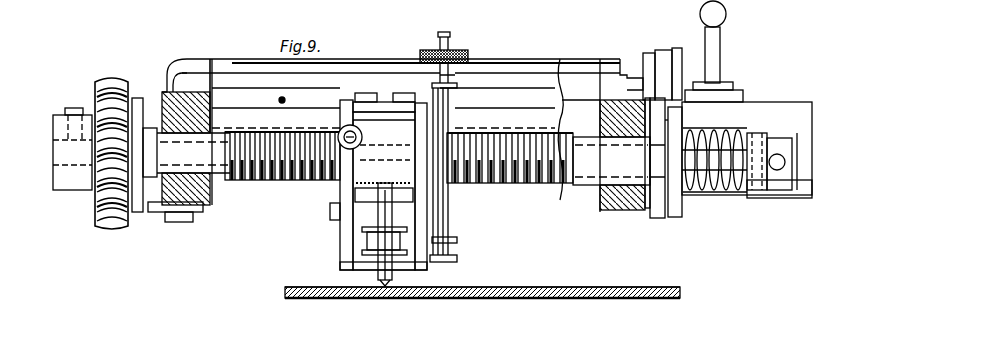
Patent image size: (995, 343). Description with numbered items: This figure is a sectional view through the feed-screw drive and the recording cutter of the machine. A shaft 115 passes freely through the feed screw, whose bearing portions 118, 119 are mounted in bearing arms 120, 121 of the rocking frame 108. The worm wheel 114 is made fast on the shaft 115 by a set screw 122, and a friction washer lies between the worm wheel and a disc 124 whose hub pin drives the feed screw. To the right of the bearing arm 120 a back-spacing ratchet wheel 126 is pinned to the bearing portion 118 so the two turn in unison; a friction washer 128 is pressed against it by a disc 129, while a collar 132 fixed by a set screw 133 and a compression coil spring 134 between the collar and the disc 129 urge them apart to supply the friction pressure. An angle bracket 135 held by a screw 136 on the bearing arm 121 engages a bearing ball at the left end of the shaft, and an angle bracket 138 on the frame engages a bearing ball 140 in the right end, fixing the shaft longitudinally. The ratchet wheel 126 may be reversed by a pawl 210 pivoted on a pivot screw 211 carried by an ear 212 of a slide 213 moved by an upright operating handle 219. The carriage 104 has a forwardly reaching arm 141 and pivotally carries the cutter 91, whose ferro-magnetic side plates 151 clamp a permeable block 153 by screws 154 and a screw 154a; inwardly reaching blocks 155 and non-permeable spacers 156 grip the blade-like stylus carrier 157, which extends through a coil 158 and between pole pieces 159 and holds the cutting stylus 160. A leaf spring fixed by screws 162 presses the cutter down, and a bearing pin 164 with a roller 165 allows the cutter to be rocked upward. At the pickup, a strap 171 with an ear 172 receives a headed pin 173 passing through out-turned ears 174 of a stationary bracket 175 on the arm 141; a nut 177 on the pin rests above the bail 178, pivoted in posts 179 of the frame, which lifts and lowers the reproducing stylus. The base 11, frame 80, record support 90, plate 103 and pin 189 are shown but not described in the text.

The base plate 11 is at (545, 318).
The frame 80 is at (482, 8).
The base surface 90 is at (560, 288).
The cutter 91 is at (365, 226).
The plate 103 is at (137, 213).
The carriage 104 is at (532, 186).
The rocking frame 108 is at (765, 130).
The worm wheel 114 is at (108, 230).
The shaft 115 is at (72, 165).
The bearing portion 118 is at (600, 206).
The bearing portion 119 is at (214, 190).
The bearing arm 120 is at (645, 210).
The bearing arm 121 is at (170, 76).
The set screw 122 is at (74, 108).
The disc 124 is at (150, 215).
The back-spacing ratchet wheel 126 is at (656, 220).
The friction washer 128 is at (673, 220).
The disc 129 is at (681, 210).
The collar 132 is at (770, 200).
The set screw 133 is at (720, 126).
The compression coil spring 134 is at (706, 190).
The angle bracket 135 is at (204, 212).
The screw 136 is at (194, 222).
The angle bracket 138 is at (790, 196).
The bearing ball 140 is at (780, 154).
The forwardly reaching arm 141 is at (430, 97).
The ferro-magnetic side plates 151 is at (340, 194).
The permeable block 153 is at (430, 128).
The screws 154 is at (266, 181).
The screw 154a is at (400, 150).
The inwardly reaching blocks 155 is at (364, 232).
The non-permeable spacers 156 is at (363, 213).
The stylus carrier 157 is at (388, 176).
The coil 158 is at (332, 240).
The pole pieces 159 is at (356, 300).
The cutting stylus 160 is at (388, 300).
The screws 162 is at (392, 93).
The bearing pin 164 is at (338, 130).
The roller 165 is at (355, 97).
The strap 171 is at (396, 285).
The ear 172 is at (460, 266).
The headed pin 173 is at (452, 246).
The out-turned ears 174 is at (448, 85).
The stationary bracket 175 is at (496, 184).
The nut 177 is at (460, 53).
The bail 178 is at (253, 52).
The posts 179 is at (215, 88).
The pin 189 is at (283, 98).
The pawl 210 is at (665, 50).
The pivot screw 211 is at (650, 62).
The ear 212 is at (677, 52).
The slide 213 is at (736, 89).
The operating handle 219 is at (722, 50).